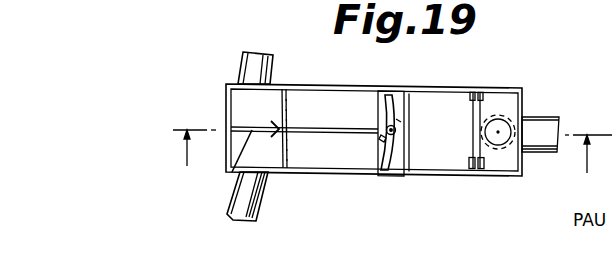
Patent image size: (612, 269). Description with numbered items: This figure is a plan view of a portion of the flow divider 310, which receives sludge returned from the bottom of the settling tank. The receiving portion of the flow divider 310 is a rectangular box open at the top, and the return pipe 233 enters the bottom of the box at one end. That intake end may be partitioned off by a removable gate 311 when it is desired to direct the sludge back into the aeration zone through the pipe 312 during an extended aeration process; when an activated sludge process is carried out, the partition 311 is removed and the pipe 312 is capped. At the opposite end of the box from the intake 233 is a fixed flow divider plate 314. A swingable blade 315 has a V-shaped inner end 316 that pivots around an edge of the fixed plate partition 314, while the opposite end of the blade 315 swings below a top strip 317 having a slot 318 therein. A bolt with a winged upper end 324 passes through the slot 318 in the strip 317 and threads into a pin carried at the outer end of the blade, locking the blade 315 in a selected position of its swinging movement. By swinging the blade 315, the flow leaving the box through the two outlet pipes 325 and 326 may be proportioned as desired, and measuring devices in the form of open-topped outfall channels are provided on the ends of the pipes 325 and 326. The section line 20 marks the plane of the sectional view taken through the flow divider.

The section line 20 is at (392, 139).
The pipe 233 is at (498, 119).
The flow divider 310 is at (373, 182).
The removable gate 311 is at (473, 152).
The pipe 312 is at (541, 117).
The fixed flow divider plate 314 is at (232, 173).
The swingable blade 315 is at (313, 127).
The V-shaped inner end 316 is at (286, 95).
The top strip 317 is at (401, 93).
The slot 318 is at (395, 113).
The winged upper end 324 is at (398, 123).
The pipe 325 is at (252, 202).
The pipe 326 is at (243, 52).